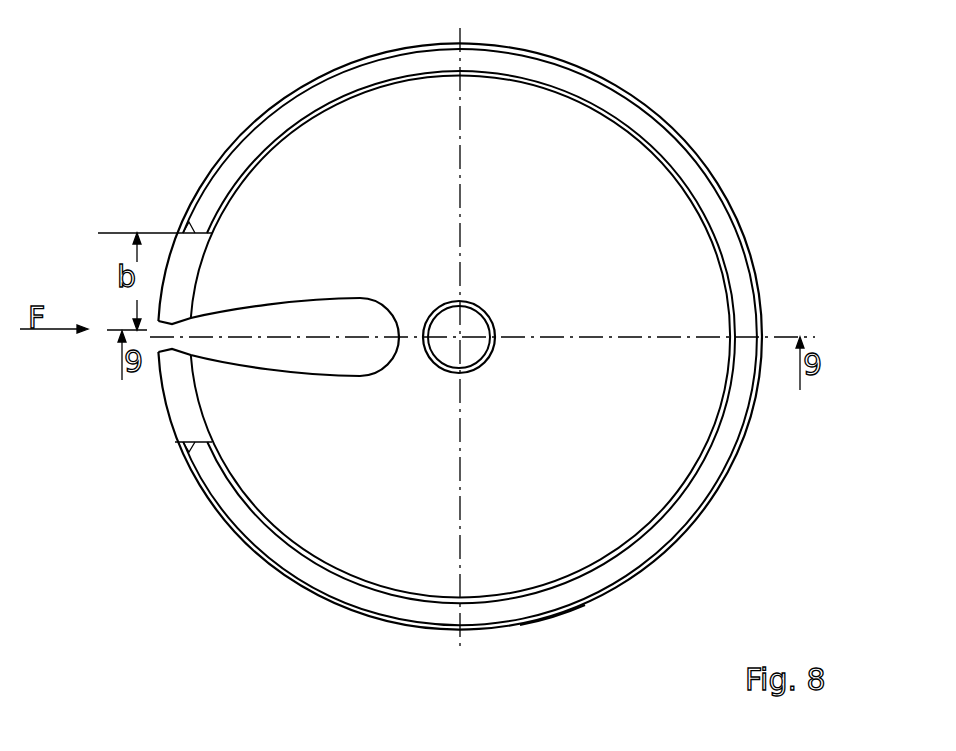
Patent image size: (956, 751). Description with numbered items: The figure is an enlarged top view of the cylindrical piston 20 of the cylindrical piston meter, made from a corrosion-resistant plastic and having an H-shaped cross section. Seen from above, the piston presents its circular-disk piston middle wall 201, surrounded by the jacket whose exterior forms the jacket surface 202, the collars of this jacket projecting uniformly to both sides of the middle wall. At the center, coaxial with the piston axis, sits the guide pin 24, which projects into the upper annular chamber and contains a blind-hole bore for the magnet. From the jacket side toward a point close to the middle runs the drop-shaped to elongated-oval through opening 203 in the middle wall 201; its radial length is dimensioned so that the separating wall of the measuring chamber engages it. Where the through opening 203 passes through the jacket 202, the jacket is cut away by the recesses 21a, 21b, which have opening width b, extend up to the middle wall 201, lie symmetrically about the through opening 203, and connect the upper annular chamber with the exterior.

The cylindrical piston 20 is at (612, 76).
The recess 21a is at (187, 231).
The recess 21b is at (183, 447).
The jacket surface 202 is at (727, 482).
The piston middle wall 201 is at (637, 500).
The through opening 203 is at (320, 378).
The guide pin 24 is at (446, 372).